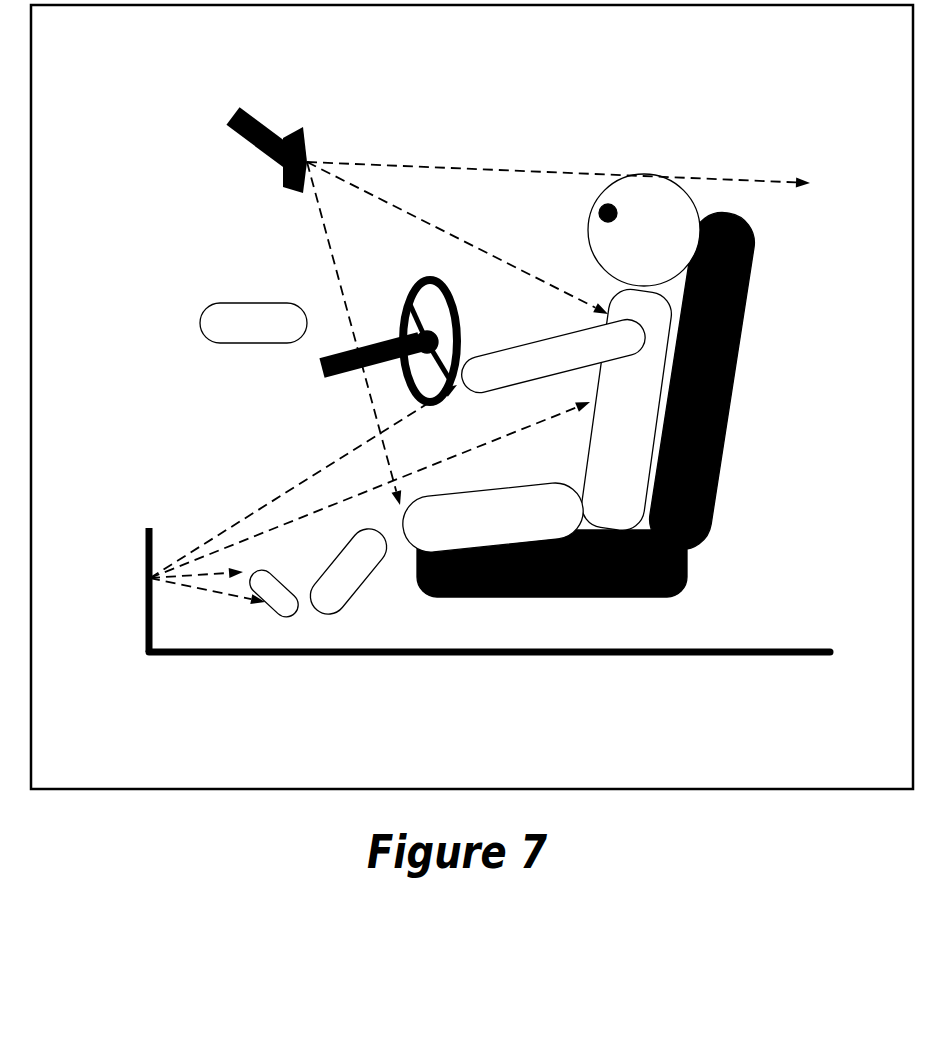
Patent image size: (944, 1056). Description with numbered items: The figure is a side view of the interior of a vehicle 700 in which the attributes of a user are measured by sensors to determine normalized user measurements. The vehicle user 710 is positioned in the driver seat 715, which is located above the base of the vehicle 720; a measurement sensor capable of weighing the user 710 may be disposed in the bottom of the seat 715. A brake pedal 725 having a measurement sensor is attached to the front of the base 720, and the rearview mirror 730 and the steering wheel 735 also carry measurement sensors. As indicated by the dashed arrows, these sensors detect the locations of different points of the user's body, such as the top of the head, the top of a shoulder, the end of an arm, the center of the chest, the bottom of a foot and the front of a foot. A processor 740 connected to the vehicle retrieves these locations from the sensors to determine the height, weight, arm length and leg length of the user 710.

The vehicle 700 is at (490, 65).
The vehicle user 710 is at (641, 446).
The driver seat 715 is at (752, 430).
The base of the vehicle 720 is at (670, 638).
The brake pedal 725 is at (148, 580).
The rearview mirror 730 is at (265, 155).
The steering wheel 735 is at (347, 377).
The processor 740 is at (270, 334).